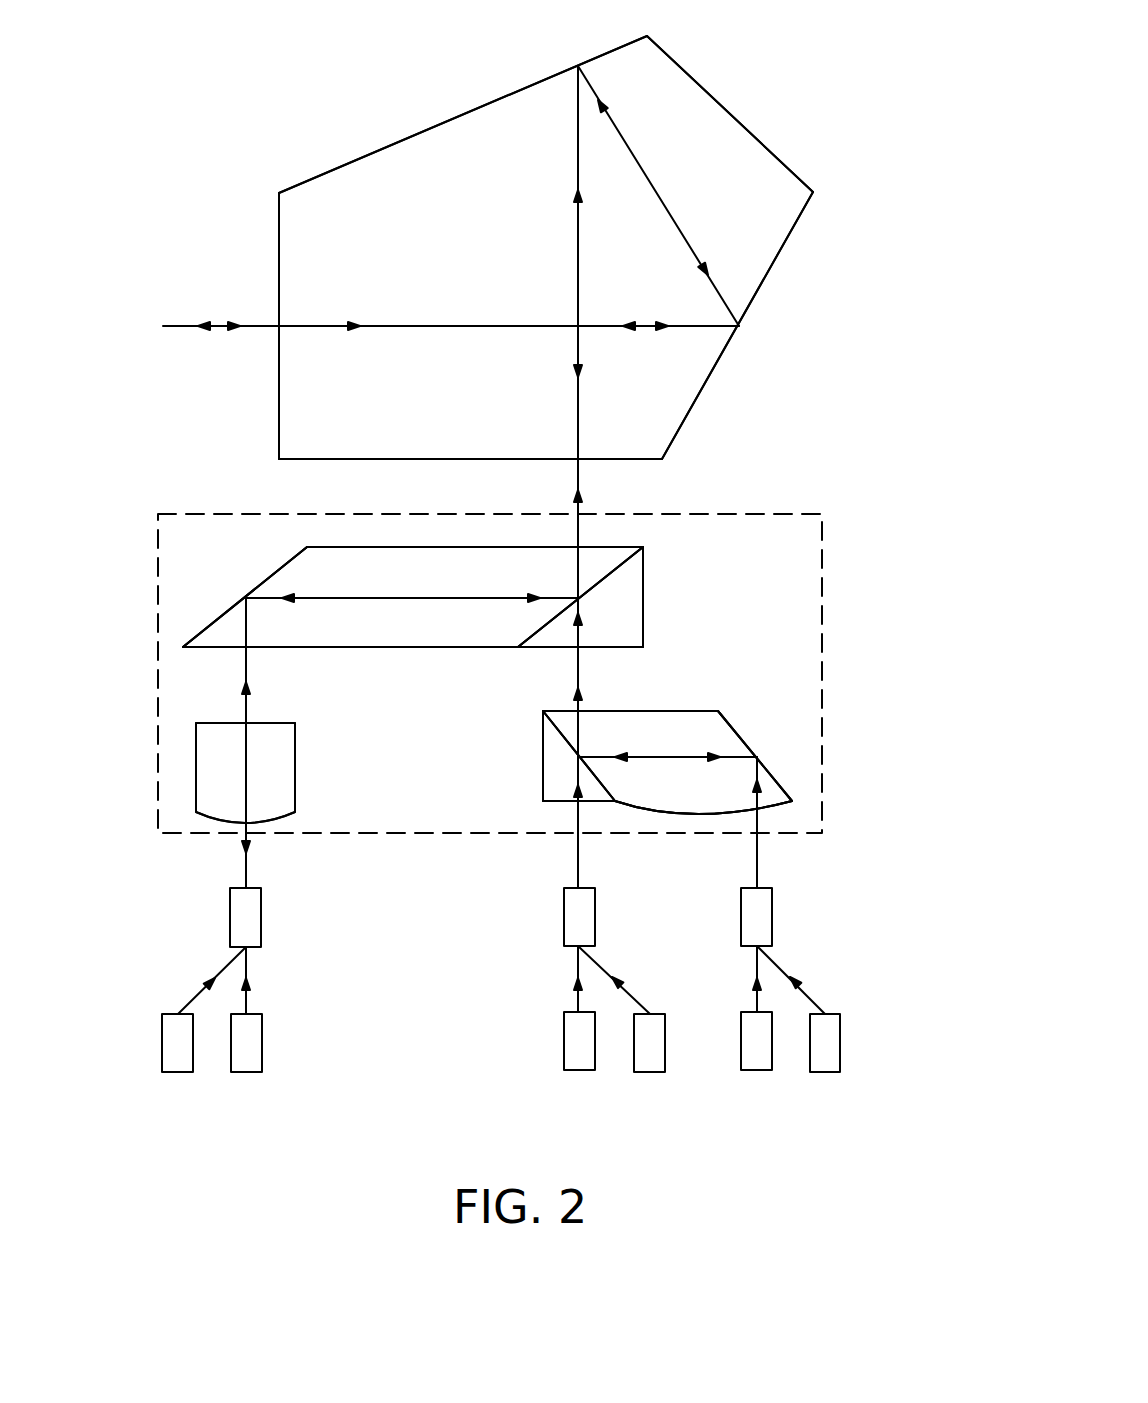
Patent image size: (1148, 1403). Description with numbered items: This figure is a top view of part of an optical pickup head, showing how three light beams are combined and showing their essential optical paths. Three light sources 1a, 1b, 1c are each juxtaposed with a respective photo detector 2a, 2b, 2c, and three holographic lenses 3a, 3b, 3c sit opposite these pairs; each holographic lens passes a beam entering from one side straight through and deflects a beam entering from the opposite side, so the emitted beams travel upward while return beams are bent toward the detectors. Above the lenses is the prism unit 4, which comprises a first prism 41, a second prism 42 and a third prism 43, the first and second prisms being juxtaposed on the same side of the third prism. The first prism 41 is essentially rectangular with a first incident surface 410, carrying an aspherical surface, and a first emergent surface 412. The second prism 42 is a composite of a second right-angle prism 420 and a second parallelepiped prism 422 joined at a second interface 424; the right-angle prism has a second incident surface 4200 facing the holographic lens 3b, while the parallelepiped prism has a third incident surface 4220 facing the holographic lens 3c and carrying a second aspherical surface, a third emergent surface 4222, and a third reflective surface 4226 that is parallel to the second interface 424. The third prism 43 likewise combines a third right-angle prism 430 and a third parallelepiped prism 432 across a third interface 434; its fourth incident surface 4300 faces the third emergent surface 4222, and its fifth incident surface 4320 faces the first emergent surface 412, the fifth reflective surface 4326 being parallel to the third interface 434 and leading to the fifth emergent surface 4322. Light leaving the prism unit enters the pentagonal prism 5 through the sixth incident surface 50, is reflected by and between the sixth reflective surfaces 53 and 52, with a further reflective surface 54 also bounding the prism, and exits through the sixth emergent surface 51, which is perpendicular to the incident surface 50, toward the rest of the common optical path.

The pentagonal prism 5 is at (524, 260).
The sixth incident surface 50 is at (340, 461).
The sixth emergent surface 51 is at (279, 410).
The sixth reflective surface 52 is at (768, 272).
The sixth reflective surface 53 is at (408, 138).
The sixth reflective surface 54 is at (686, 71).
The prism unit 4 is at (787, 552).
The first prism 41 is at (229, 772).
The first incident surface 410 is at (270, 822).
The first emergent surface 412 is at (225, 722).
The second prism 42 is at (633, 813).
The second right-angle prism 420 is at (552, 762).
The second incident surface 4200 is at (553, 803).
The second parallelepiped prism 422 is at (710, 778).
The third incident surface 4220 is at (768, 803).
The third emergent surface 4222 is at (697, 708).
The third reflective surface 4226 is at (747, 745).
The second interface 424 is at (545, 722).
The third prism 43 is at (425, 621).
The third right-angle prism 430 is at (552, 637).
The fourth incident surface 4300 is at (622, 648).
The third parallelepiped prism 432 is at (365, 623).
The fifth incident surface 4320 is at (222, 650).
The fifth emergent surface 4322 is at (437, 547).
The fifth reflective surface 4326 is at (203, 632).
The third interface 434 is at (545, 626).
The light source 1a is at (246, 1045).
The light source 1b is at (577, 1058).
The light source 1c is at (755, 1050).
The photo detector 2a is at (178, 1050).
The photo detector 2b is at (652, 1060).
The photo detector 2c is at (827, 1050).
The holographic lens 3a is at (237, 918).
The holographic lens 3b is at (570, 920).
The holographic lens 3c is at (763, 925).